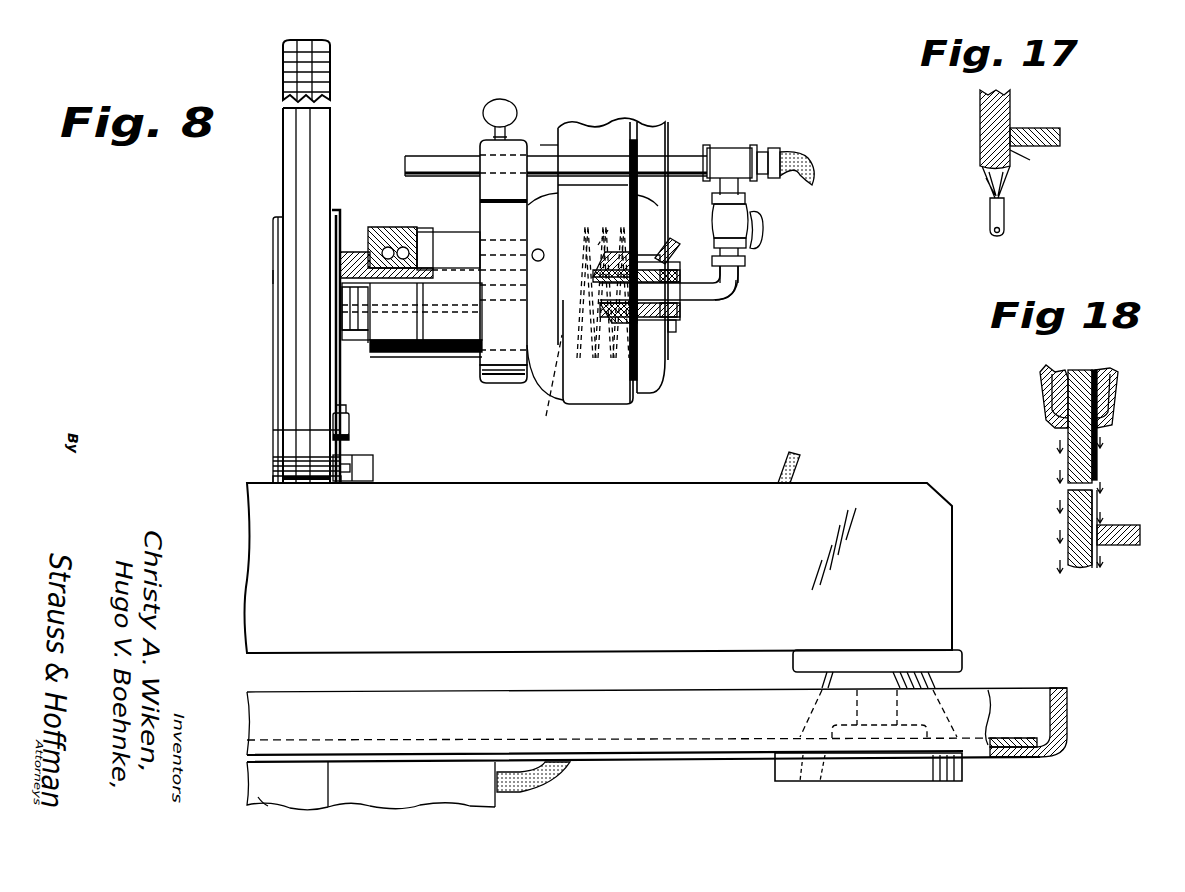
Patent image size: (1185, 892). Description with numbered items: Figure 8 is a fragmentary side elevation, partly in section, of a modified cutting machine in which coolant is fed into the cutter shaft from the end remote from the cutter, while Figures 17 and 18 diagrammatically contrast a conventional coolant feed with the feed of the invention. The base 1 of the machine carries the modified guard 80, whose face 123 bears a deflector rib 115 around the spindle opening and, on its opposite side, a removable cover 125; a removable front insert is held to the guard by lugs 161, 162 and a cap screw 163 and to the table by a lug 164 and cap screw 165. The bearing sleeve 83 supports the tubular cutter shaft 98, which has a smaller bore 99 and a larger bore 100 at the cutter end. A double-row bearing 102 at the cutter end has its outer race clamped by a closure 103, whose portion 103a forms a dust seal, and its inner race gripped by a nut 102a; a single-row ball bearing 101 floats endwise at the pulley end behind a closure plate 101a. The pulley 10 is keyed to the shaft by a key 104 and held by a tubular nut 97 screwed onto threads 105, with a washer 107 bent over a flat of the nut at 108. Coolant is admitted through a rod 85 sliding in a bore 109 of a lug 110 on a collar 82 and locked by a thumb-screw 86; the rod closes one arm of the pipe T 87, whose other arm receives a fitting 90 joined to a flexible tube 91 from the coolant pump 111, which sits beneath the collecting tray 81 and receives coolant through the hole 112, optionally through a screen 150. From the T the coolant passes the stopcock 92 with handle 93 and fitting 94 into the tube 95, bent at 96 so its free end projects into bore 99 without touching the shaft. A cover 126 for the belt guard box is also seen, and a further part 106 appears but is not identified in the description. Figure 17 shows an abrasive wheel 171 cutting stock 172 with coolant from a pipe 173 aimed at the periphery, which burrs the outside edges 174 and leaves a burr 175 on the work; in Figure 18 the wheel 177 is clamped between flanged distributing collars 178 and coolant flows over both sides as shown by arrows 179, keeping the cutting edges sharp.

In FIG. 8, the base 1 is at (946, 578).
In FIG. 8, the pulley 10 is at (606, 232).
In FIG. 8, the guard 80 is at (306, 153).
In FIG. 8, the coolant collecting tray 81 is at (1068, 690).
In FIG. 8, the collar 82 is at (506, 384).
In FIG. 8, the bearing sleeve 83 is at (463, 362).
In FIG. 8, the rod 85 is at (448, 156).
In FIG. 8, the thumb-screw 86 is at (505, 104).
In FIG. 8, the pipe T 87 is at (728, 156).
In FIG. 8, the fitting 90 is at (776, 152).
In FIG. 8, the flexible tube 91 is at (810, 164).
In FIG. 8, the stopcock 92 is at (748, 215).
In FIG. 8, the operating handle 93 is at (765, 232).
In FIG. 8, the fitting 94 is at (748, 264).
In FIG. 8, the tube 95 is at (714, 301).
In FIG. 8, the bend 96 is at (740, 288).
In FIG. 8, the tubular nut 97 is at (680, 320).
In FIG. 8, the cutter shaft 98 is at (448, 250).
In FIG. 8, the bore 99 is at (598, 352).
In FIG. 8, the bore 100 is at (420, 358).
In FIG. 8, the single-row ball bearing 101 is at (560, 223).
In FIG. 8, the closure plate 101a is at (561, 381).
In FIG. 8, the double-row bearing 102 is at (400, 228).
In FIG. 8, the nut 102a is at (426, 230).
In FIG. 8, the closure 103 is at (366, 250).
In FIG. 8, the projecting portion 103a is at (365, 345).
In FIG. 8, the key 104 is at (648, 252).
In FIG. 8, the threads 105 is at (676, 266).
In FIG. 8, the nozzle sleeve 106 is at (681, 278).
In FIG. 8, the washer 107 is at (677, 333).
In FIG. 8, the bent-over portion 108 is at (672, 246).
In FIG. 8, the bore 109 is at (541, 145).
In FIG. 8, the lug 110 is at (481, 190).
In FIG. 8, the coolant pump 111 is at (428, 776).
In FIG. 8, the hole 112 is at (318, 740).
In FIG. 8, the deflector rib 115 is at (306, 455).
In FIG. 8, the face of the guard 123 is at (735, 640).
In FIG. 8, the removable cover 125 is at (274, 277).
In FIG. 8, the cover 126 is at (610, 126).
In FIG. 8, the screen 150 is at (260, 800).
In FIG. 8, the lug 161 is at (350, 424).
In FIG. 8, the lug 162 is at (350, 438).
In FIG. 8, the cap screw 163 is at (347, 411).
In FIG. 8, the lug 164 is at (374, 474).
In FIG. 8, the cap screw 165 is at (374, 460).
In FIG. 17, the abrasive wheel 171 is at (1011, 106).
In FIG. 17, the stock 172 is at (1056, 129).
In FIG. 18, the stock 172 is at (1114, 525).
In FIG. 17, the pipe 173 is at (1005, 215).
In FIG. 17, the outside edges 174 is at (1012, 176).
In FIG. 17, the burr 175 is at (1011, 157).
In FIG. 18, the abrasive wheel 177 is at (1090, 433).
In FIG. 18, the flanged distributing collars 178 is at (1112, 386).
In FIG. 18, the arrows 179 is at (1096, 450).